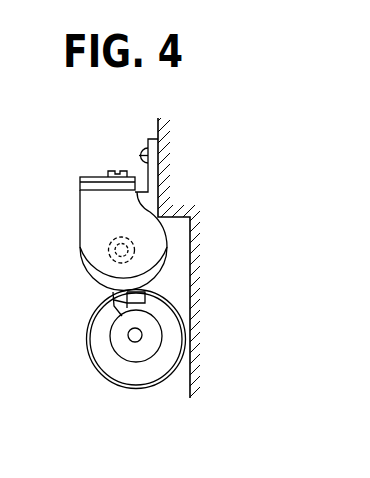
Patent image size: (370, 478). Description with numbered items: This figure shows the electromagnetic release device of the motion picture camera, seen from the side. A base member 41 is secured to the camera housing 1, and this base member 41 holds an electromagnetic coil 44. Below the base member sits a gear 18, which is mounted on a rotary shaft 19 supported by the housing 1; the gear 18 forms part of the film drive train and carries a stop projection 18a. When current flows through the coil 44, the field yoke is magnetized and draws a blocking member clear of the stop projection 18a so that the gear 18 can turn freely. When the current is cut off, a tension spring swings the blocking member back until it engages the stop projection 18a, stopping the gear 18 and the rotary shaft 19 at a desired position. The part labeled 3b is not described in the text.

The housing 1 is at (194, 152).
The base member 41 is at (148, 140).
The electromagnetic coil 44 is at (167, 258).
The tab 3b is at (145, 296).
The stop projection 18a is at (110, 305).
The rotary shaft 19 is at (128, 335).
The gear 18 is at (108, 359).